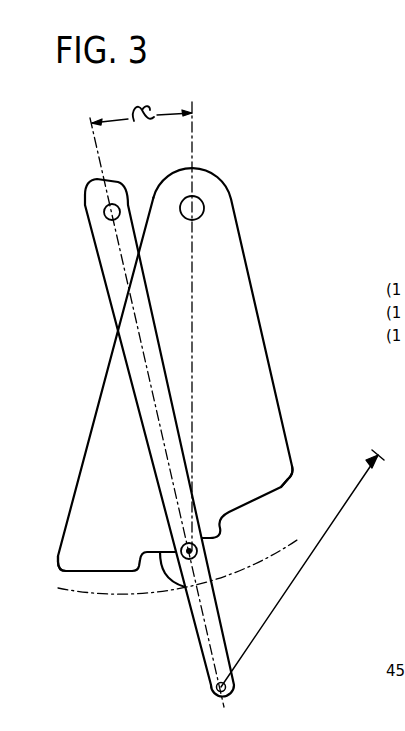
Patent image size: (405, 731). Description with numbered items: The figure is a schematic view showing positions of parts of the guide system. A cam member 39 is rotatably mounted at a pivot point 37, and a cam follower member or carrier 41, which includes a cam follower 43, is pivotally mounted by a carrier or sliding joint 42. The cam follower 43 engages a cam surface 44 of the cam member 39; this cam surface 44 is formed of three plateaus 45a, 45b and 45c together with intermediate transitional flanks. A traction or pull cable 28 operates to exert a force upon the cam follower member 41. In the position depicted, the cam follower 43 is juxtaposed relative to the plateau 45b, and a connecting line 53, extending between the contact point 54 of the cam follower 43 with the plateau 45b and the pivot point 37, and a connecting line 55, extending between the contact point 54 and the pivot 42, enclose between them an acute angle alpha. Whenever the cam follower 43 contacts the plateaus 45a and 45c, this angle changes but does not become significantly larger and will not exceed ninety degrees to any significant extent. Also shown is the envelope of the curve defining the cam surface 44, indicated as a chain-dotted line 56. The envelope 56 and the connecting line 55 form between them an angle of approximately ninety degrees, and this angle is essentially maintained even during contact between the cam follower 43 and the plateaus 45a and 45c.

The traction or pull cable 28 is at (293, 580).
The pivot point 37 is at (204, 206).
The cam member 39 is at (247, 277).
The cam follower member or carrier 41 is at (113, 290).
The carrier or sliding joint 42 is at (104, 212).
The cam follower 43 is at (197, 553).
The cam surface 44 is at (118, 571).
The plateau 45a is at (281, 490).
The plateau 45b is at (173, 583).
The plateau 45c is at (83, 571).
The connecting line 53 is at (192, 357).
The contact point 54 is at (183, 546).
The connecting line 55 is at (157, 393).
The envelope (chain-dotted line) 56 is at (258, 567).